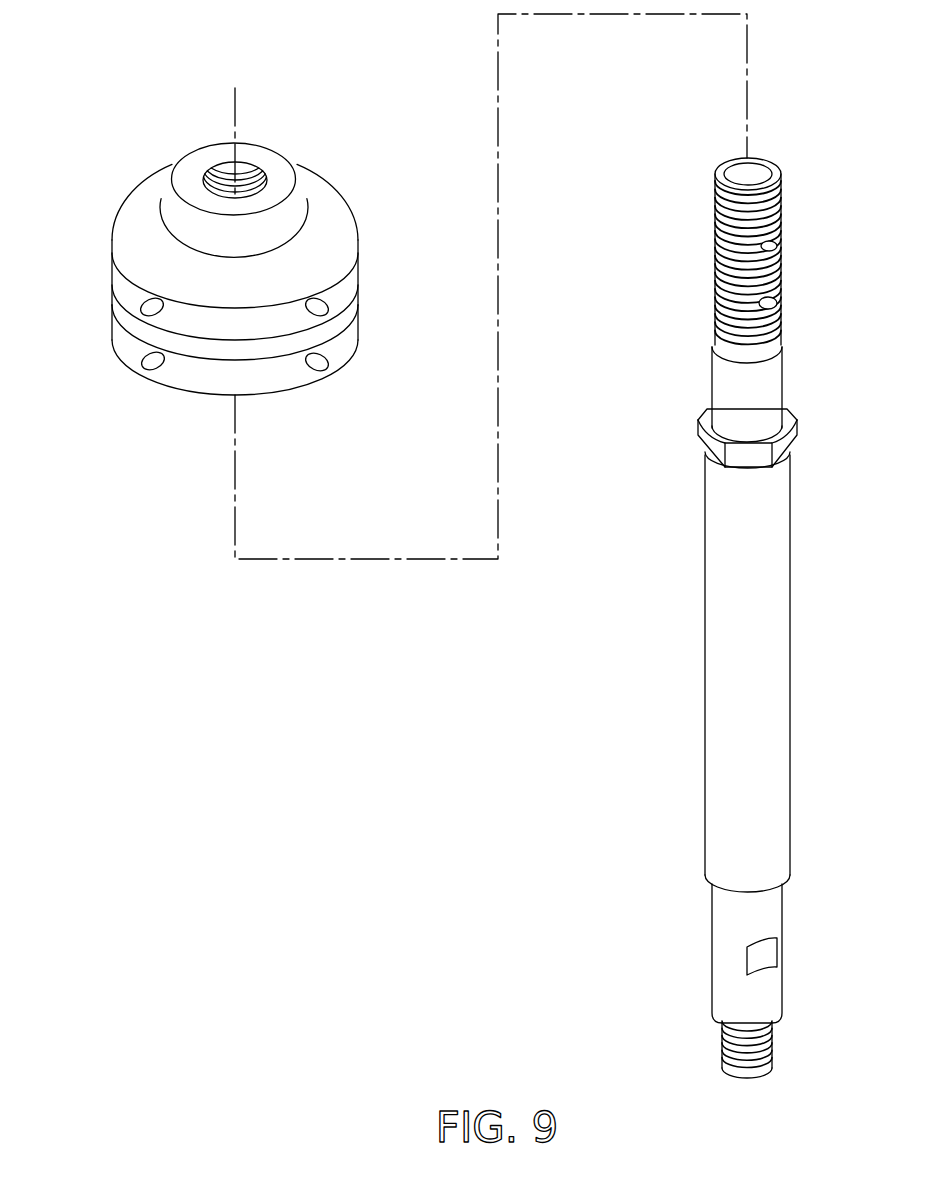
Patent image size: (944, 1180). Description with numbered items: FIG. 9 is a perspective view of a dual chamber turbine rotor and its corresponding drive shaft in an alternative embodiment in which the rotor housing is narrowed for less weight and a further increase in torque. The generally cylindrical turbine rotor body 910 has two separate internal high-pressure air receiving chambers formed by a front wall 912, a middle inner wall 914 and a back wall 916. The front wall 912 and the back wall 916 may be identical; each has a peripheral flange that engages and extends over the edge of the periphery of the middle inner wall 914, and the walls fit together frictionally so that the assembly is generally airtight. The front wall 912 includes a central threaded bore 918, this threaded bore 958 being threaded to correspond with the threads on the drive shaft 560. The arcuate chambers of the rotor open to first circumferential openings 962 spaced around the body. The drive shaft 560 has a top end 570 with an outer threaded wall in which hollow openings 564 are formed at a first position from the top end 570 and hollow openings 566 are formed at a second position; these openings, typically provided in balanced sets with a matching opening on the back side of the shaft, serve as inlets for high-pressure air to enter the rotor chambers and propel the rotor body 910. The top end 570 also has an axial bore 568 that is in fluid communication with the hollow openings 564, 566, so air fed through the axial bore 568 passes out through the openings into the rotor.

The turbine rotor body 910 is at (240, 254).
The front wall 912 is at (337, 225).
The middle inner wall 914 is at (240, 290).
The back wall 916 is at (234, 375).
The central threaded bore 918 is at (218, 173).
The threaded bore 958 is at (143, 306).
The first circumferential opening 962 is at (157, 370).
The drive shaft 560 is at (754, 605).
The hollow opening 564 is at (772, 248).
The hollow opening 566 is at (776, 310).
The axial bore 568 is at (760, 172).
The top end 570 is at (797, 428).